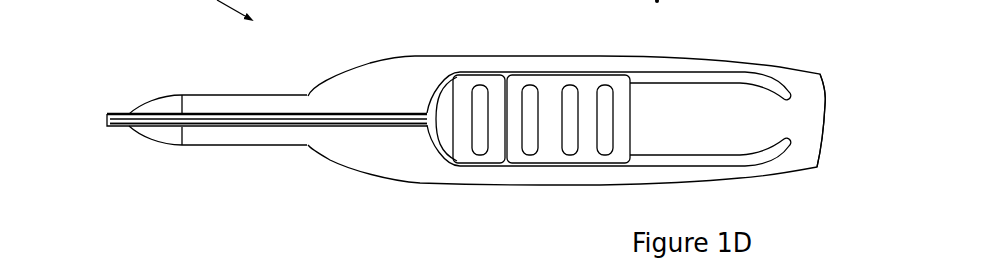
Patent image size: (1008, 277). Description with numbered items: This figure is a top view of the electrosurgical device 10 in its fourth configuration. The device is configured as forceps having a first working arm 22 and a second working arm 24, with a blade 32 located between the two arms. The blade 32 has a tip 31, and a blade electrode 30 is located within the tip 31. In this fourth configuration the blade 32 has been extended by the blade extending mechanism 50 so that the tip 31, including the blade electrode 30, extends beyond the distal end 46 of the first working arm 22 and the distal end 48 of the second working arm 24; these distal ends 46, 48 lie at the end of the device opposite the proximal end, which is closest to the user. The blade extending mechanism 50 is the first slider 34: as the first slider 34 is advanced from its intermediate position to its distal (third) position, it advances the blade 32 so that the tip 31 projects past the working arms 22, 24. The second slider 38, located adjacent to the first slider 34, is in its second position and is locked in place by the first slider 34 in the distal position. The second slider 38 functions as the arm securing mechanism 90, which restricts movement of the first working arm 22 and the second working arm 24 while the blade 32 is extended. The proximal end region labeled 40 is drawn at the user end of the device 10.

The electrosurgical device 10 is at (737, 48).
The first working arm 22 is at (233, 101).
The second working arm 24 is at (243, 141).
The blade electrode 30 is at (107, 124).
The tip 31 is at (107, 116).
The blade 32 is at (288, 130).
The first slider 34 is at (583, 90).
The second slider 38 is at (468, 84).
The proximal end 40 is at (830, 67).
The distal end of the first working arm 46 is at (130, 113).
The distal end of the second working arm 48 is at (130, 127).
The blade extending mechanism 50 is at (628, 51).
The arm securing mechanism 90 is at (486, 87).